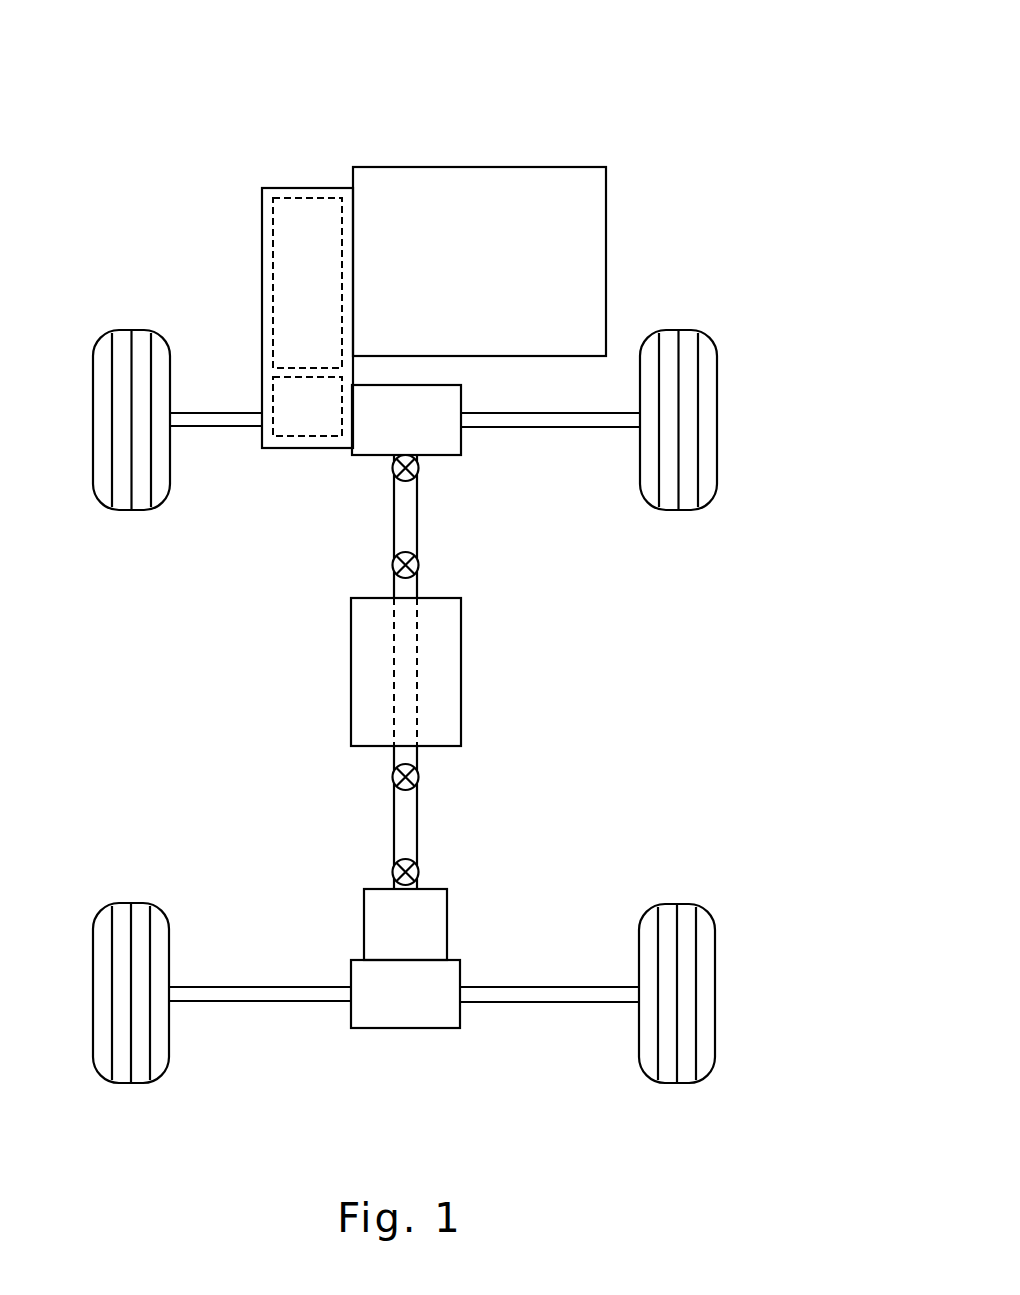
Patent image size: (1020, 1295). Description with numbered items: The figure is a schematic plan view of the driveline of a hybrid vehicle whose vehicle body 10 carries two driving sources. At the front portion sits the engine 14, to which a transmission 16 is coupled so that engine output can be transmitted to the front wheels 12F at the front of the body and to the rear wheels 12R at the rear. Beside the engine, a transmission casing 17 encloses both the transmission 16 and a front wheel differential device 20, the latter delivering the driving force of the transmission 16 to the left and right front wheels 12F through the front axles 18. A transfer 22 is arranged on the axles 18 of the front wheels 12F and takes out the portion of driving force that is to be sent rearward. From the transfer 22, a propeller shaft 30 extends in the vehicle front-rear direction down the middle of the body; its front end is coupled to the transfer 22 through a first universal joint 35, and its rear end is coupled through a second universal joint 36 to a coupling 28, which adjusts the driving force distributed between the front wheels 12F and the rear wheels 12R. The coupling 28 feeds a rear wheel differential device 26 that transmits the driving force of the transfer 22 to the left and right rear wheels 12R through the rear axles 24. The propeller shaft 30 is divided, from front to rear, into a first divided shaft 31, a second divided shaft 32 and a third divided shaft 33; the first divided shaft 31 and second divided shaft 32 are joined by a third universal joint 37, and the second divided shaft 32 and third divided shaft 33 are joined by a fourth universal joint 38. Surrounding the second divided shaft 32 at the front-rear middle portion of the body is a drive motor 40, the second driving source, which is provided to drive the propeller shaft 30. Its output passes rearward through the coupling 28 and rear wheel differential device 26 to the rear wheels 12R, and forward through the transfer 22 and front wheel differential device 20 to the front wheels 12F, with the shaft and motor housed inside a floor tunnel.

The vehicle body 10 is at (652, 66).
The front wheels 12F is at (137, 330).
The rear wheels 12R is at (135, 903).
The engine 14 is at (461, 277).
The transmission 16 is at (292, 297).
The transmission casing 17 is at (306, 188).
The axles 18 is at (207, 413).
The front wheel differential device 20 is at (292, 425).
The transfer 22 is at (388, 435).
The axles 24 is at (255, 1002).
The rear wheel differential device 26 is at (388, 1009).
The coupling 28 is at (388, 939).
The propeller shaft 30 is at (392, 804).
The first divided shaft 31 is at (418, 518).
The second divided shaft 32 is at (418, 578).
The third divided shaft 33 is at (418, 832).
The first universal joint 35 is at (392, 464).
The second universal joint 36 is at (392, 866).
The third universal joint 37 is at (392, 562).
The fourth universal joint 38 is at (392, 772).
The drive motor 40 is at (461, 688).